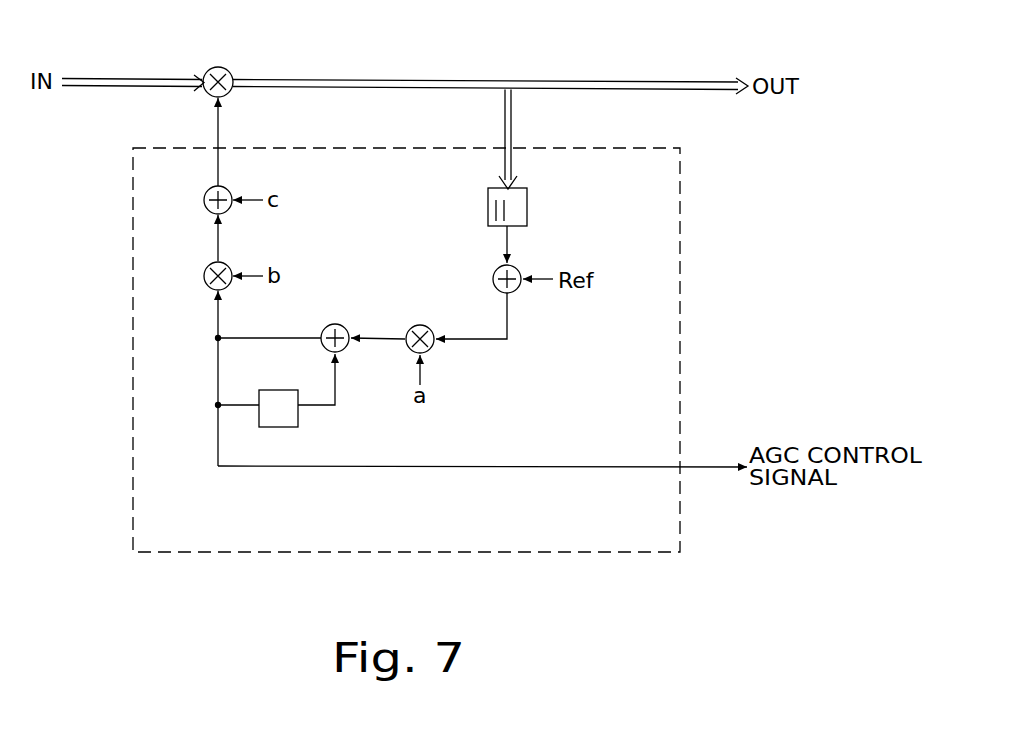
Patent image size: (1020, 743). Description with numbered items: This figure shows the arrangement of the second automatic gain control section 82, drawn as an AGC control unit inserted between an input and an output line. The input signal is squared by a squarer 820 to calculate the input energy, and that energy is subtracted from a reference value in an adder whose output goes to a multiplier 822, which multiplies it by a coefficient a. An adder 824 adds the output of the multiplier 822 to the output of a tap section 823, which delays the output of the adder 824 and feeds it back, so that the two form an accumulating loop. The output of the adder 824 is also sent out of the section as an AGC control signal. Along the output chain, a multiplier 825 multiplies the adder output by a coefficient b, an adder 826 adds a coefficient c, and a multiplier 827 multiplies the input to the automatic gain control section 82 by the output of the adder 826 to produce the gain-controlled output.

The second automatic gain control section 82 is at (681, 212).
The squarer 820 is at (527, 198).
The multiplier 822 is at (417, 321).
The tap section 823 is at (298, 416).
The adder 824 is at (340, 321).
The multiplier 825 is at (208, 285).
The adder 826 is at (208, 209).
The multiplier 827 is at (206, 96).